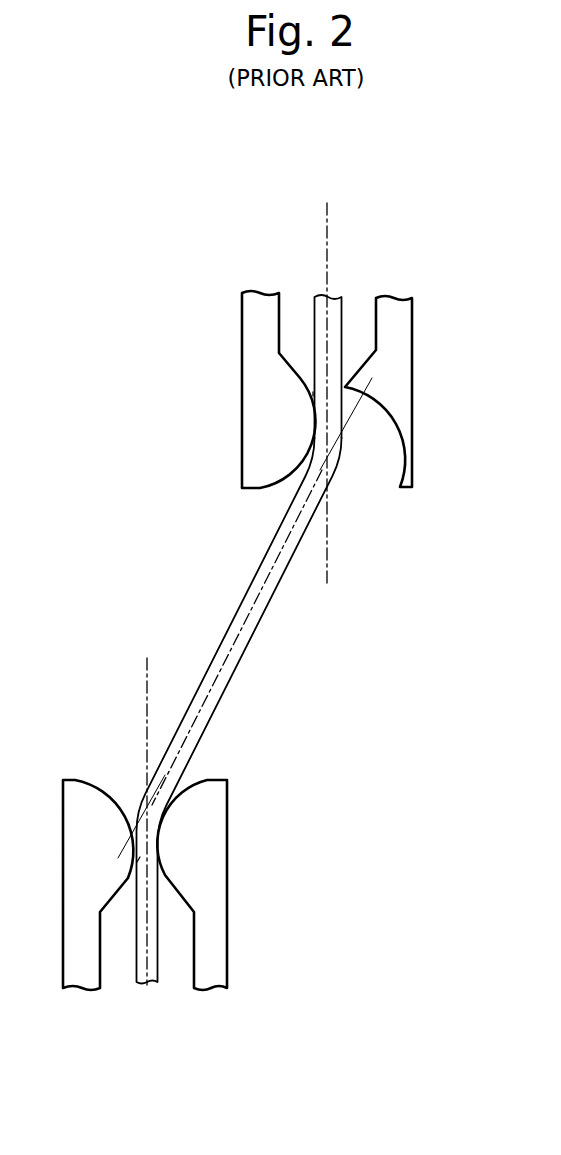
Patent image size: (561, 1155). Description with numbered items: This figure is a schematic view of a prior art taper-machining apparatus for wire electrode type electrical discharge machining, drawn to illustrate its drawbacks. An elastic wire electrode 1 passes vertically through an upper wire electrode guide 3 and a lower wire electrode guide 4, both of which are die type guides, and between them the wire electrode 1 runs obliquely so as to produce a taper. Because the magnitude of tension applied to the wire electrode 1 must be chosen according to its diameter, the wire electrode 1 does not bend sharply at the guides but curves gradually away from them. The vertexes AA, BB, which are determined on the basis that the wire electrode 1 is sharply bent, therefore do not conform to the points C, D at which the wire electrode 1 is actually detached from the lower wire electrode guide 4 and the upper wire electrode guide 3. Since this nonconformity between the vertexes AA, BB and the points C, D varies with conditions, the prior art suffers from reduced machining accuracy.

The wire electrode 1 is at (250, 637).
The upper wire electrode guide 3 is at (400, 318).
The lower wire electrode guide 4 is at (222, 953).
The point D is at (313, 392).
The vertex BB is at (327, 468).
The vertex AA is at (150, 803).
The point C is at (140, 857).